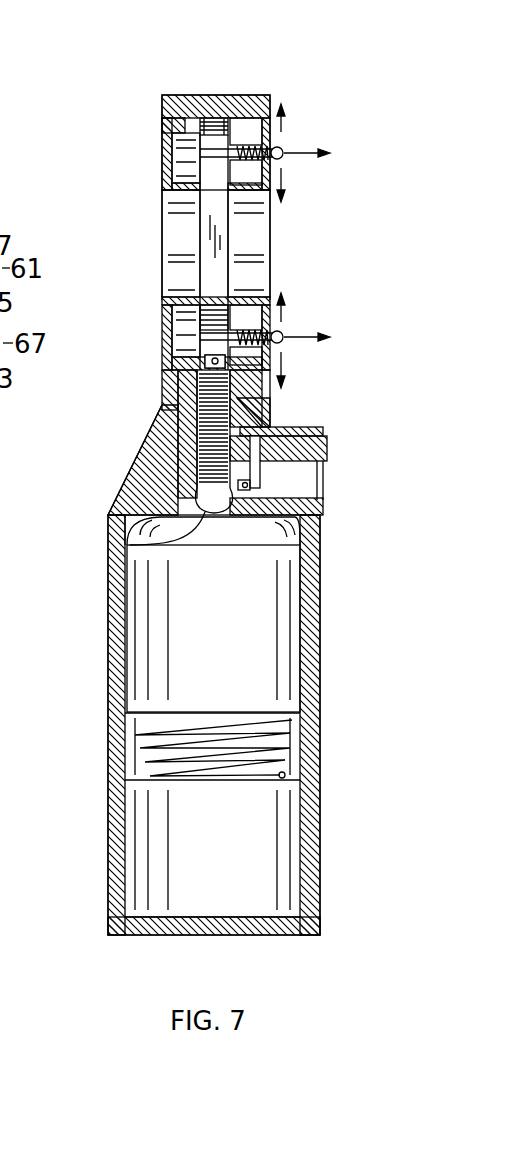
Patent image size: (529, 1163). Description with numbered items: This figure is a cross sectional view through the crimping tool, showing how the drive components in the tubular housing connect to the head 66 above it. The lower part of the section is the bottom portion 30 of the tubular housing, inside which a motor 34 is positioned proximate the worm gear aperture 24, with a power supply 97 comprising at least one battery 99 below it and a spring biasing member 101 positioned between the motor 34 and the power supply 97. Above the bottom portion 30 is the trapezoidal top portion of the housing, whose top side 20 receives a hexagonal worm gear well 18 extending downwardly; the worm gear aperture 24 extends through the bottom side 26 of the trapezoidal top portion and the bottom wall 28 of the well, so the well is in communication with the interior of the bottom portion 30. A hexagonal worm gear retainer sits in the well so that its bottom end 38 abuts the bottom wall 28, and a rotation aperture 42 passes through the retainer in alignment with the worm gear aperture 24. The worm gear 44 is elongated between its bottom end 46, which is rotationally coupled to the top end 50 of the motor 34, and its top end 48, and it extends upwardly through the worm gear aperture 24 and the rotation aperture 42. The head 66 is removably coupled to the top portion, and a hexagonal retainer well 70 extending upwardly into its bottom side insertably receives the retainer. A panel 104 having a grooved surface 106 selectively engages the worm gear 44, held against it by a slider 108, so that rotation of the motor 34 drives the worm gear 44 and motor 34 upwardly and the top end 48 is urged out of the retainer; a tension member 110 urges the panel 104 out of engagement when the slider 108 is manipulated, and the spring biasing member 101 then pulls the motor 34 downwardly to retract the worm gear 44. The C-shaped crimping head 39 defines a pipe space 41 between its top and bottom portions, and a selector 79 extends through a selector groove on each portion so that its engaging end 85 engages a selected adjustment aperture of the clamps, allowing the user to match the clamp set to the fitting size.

The head 66 is at (128, 94).
The crimping head 39 is at (257, 95).
The engaging end 85 is at (205, 150).
The selector 79 is at (283, 152).
The pipe space 41 is at (250, 233).
The rotation aperture 42 is at (165, 345).
The bottom end 46 is at (272, 342).
The hexagonal retainer well 70 is at (165, 372).
The hexagonal worm gear well 18 is at (165, 410).
The bottom wall 28 is at (165, 448).
The bottom end 38 is at (138, 462).
The top side 20 is at (262, 405).
The grooved surface 106 is at (265, 410).
The tension member 110 is at (262, 414).
The panel 104 is at (325, 431).
The slider 108 is at (328, 448).
The worm gear aperture 24 is at (250, 486).
The top end 50 is at (312, 508).
The bottom portion 30 is at (70, 730).
The bottom side 26 is at (320, 536).
The worm gear 44 is at (112, 501).
The top end 48 is at (130, 546).
The motor 34 is at (280, 600).
The spring biasing member 101 is at (150, 741).
The power supply 97 is at (150, 825).
The battery 99 is at (277, 840).